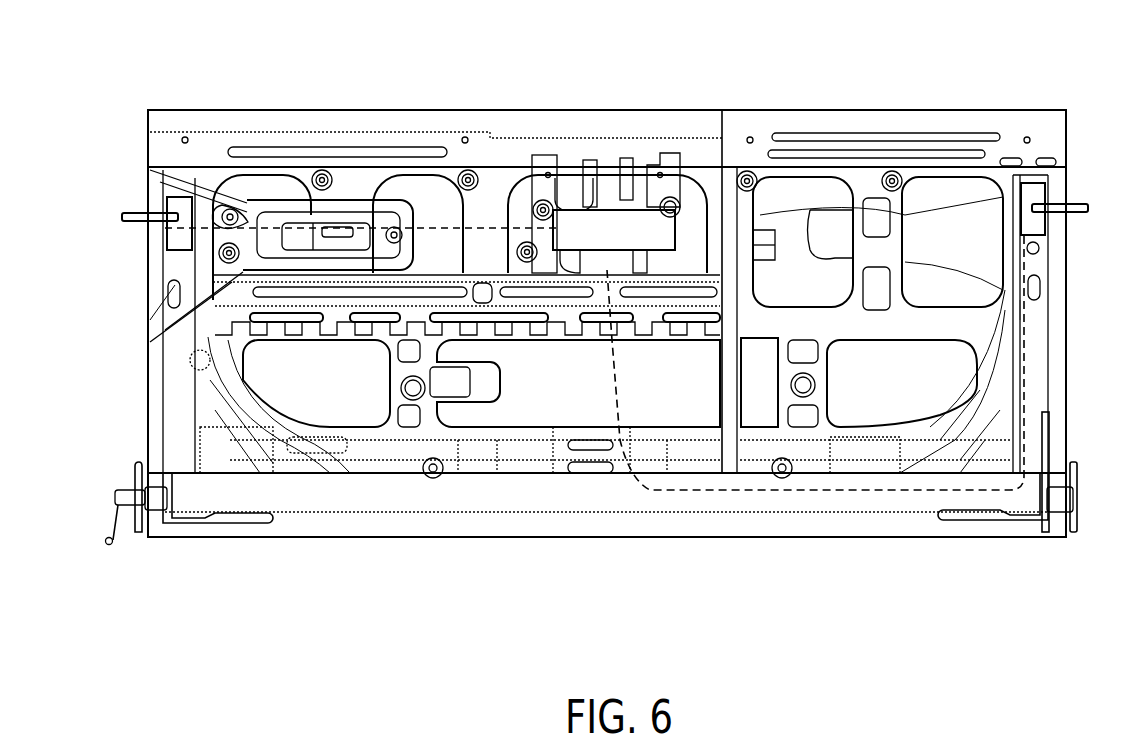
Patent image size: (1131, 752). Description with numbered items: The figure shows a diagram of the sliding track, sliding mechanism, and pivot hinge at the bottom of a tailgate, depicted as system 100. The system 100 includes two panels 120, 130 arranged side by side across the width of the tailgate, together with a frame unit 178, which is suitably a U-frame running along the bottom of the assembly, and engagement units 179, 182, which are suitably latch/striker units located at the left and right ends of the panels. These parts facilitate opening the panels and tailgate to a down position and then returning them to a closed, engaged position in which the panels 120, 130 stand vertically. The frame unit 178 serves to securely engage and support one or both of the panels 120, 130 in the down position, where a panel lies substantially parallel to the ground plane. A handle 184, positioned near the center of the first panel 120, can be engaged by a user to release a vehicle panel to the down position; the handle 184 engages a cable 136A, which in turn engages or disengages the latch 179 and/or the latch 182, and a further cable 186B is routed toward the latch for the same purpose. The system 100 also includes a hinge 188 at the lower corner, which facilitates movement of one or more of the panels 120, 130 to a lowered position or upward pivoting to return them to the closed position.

The system 100 is at (115, 178).
The panel 120 is at (222, 155).
The cable 136A is at (338, 220).
The handle 184 is at (598, 222).
The engagement unit 182 is at (1037, 178).
The panel 130 is at (1013, 290).
The engagement unit 179 is at (182, 257).
The frame unit 178 is at (497, 498).
The cable for latch 186B is at (761, 506).
The hinge 188 is at (1059, 512).